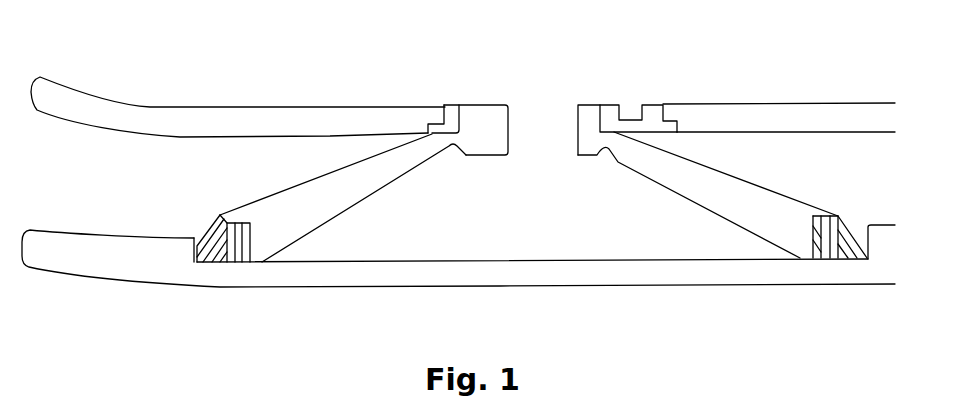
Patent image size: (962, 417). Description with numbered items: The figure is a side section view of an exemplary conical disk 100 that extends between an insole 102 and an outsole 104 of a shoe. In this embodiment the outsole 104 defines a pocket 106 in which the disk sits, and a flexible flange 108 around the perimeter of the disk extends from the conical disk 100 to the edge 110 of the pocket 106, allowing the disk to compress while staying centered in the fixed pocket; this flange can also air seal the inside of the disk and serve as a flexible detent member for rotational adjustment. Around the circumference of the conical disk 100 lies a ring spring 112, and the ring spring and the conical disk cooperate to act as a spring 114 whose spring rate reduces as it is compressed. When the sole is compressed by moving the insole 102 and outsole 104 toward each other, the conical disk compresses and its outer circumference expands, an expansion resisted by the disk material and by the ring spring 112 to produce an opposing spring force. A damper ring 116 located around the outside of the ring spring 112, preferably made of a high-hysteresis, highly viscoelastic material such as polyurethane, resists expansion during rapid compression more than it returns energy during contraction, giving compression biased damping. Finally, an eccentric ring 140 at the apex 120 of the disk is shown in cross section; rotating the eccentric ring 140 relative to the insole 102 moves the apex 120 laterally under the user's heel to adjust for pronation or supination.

The conical disk 100 is at (356, 206).
The insole 102 is at (257, 120).
The outsole 104 is at (115, 268).
The pocket 106 is at (553, 262).
The flexible flange 108 is at (207, 236).
The edge of pocket 110 is at (193, 258).
The ring spring 112 is at (813, 230).
The spring 114 is at (800, 171).
The damper ring 116 is at (838, 257).
The apex of the disk 120 is at (495, 118).
The eccentric ring 140 is at (450, 107).